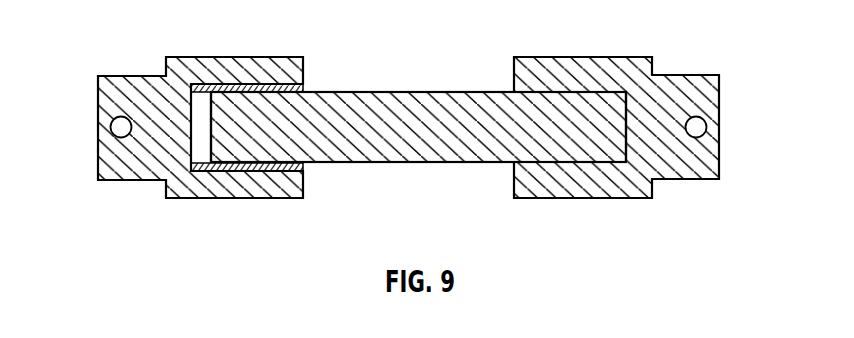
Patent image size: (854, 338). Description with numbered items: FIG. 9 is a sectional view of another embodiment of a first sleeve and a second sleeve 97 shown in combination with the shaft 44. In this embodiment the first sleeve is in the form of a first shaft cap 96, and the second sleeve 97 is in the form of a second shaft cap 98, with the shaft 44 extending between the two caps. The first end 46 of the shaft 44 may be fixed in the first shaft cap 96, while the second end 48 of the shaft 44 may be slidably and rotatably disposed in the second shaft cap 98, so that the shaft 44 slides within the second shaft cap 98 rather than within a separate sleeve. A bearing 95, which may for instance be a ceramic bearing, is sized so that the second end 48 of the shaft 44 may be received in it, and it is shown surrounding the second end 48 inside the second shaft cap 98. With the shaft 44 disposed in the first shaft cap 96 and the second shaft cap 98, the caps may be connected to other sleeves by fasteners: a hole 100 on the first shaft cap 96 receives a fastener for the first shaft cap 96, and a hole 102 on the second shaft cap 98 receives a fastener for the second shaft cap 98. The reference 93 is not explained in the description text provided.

The shaft 44 is at (387, 92).
The first end of the shaft 46 is at (628, 106).
The second end of the shaft 48 is at (210, 106).
The second end fitting 93 is at (685, 179).
The bearing 95 is at (303, 164).
The first shaft cap 96 is at (552, 57).
The second sleeve 97 is at (121, 75).
The second shaft cap 98 is at (197, 198).
The hole 100 is at (697, 127).
The hole 102 is at (122, 127).